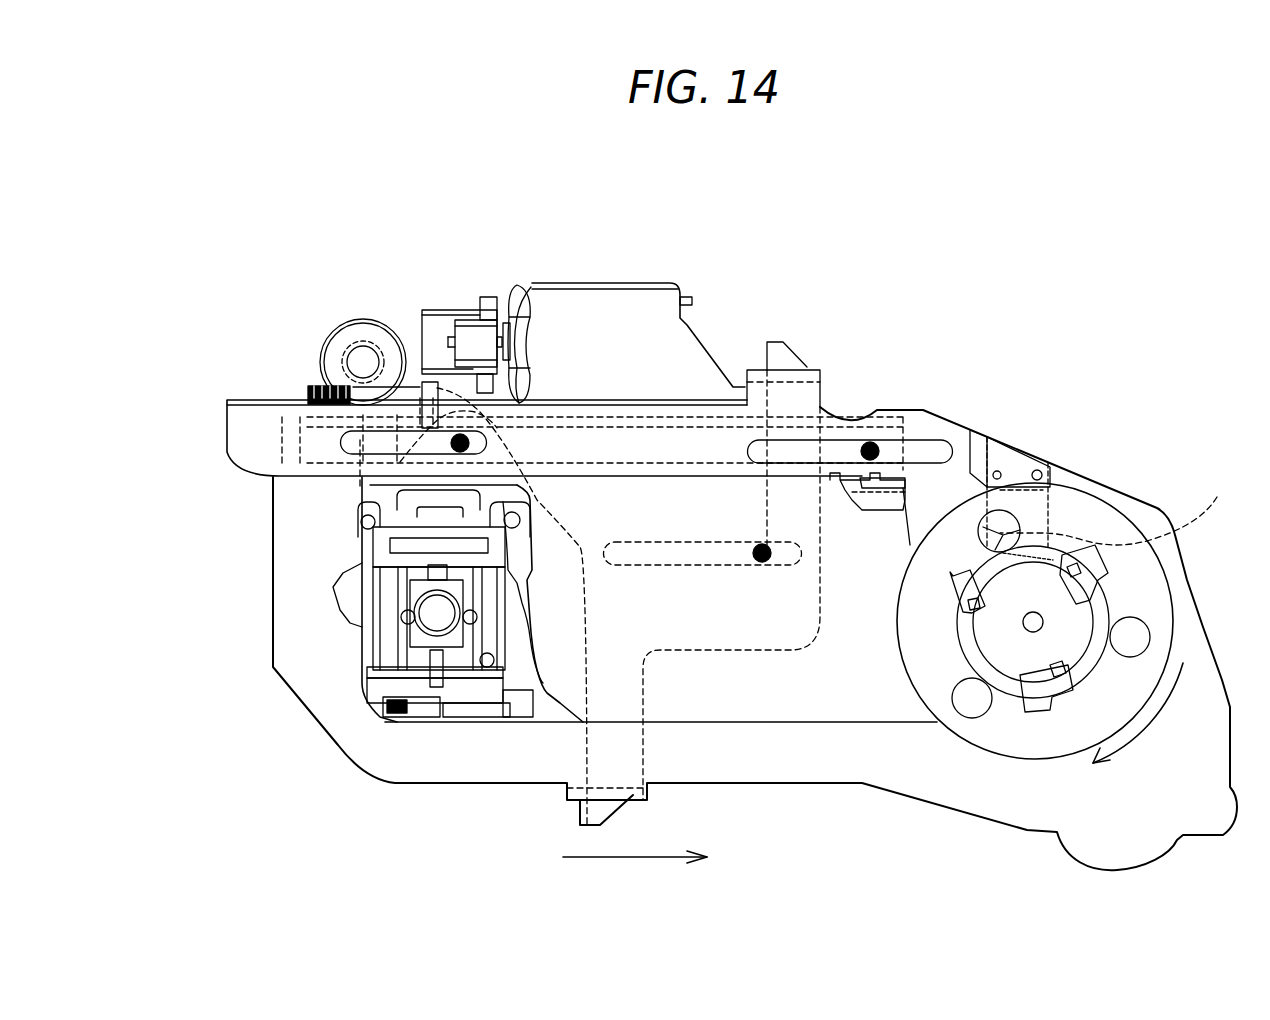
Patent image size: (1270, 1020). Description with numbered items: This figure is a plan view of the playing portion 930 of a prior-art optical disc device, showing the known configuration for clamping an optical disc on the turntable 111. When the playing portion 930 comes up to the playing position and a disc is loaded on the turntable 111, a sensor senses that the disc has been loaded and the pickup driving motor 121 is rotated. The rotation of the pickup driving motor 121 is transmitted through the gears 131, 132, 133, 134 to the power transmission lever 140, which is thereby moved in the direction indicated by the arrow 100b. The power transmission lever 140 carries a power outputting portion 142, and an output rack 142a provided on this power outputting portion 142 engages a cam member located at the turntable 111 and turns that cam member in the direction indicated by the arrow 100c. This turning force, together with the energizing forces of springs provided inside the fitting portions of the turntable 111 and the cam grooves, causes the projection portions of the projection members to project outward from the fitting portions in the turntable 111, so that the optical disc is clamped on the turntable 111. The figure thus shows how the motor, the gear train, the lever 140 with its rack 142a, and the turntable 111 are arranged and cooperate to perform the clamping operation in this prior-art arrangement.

The playing portion 930 is at (775, 182).
The power transmission lever 140 is at (223, 456).
The gear 134 is at (362, 322).
The gear 132 is at (455, 335).
The gear 131 is at (480, 325).
The pickup driving motor 121 is at (531, 287).
The gear 133 is at (415, 393).
The power outputting portion 142 is at (1033, 460).
The output rack 142a is at (1123, 505).
The turntable 111 is at (1095, 513).
The arrow 100b is at (617, 860).
The arrow 100c is at (1132, 743).